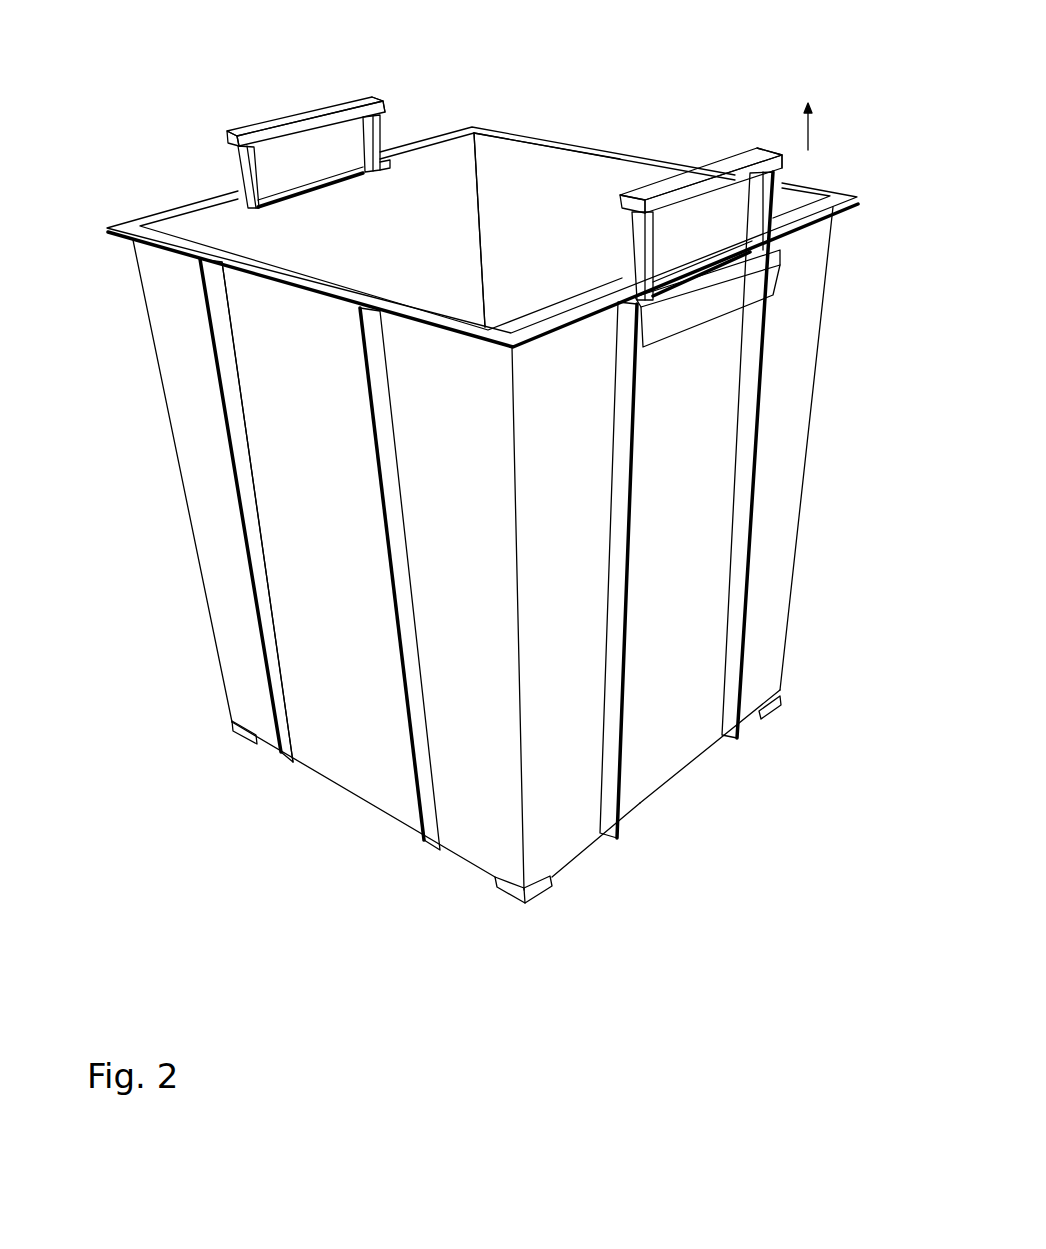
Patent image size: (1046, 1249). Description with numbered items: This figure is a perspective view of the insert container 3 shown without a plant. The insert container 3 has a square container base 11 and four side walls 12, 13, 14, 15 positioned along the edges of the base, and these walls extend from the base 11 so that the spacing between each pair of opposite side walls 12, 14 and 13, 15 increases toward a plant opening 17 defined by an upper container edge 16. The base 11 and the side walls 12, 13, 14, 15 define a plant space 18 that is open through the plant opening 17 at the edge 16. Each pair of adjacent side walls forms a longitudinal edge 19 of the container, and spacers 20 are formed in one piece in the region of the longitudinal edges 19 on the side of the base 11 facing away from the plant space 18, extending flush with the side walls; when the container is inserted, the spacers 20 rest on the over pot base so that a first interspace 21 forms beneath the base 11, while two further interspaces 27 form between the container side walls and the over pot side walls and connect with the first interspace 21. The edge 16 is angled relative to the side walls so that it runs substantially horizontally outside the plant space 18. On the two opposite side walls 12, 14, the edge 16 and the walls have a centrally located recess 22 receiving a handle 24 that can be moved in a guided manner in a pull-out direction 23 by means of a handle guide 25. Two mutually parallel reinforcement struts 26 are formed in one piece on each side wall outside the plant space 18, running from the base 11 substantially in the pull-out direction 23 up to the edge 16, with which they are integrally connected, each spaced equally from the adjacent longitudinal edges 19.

The insert container 3 is at (547, 128).
The container base 11 is at (563, 867).
The container side wall 12 is at (800, 436).
The container side wall 13 is at (600, 170).
The container side wall 14 is at (430, 166).
The container side wall 15 is at (187, 453).
The upper container edge 16 is at (123, 225).
The plant opening 17 is at (513, 160).
The plant space 18 is at (581, 239).
The longitudinal edge 19 is at (516, 868).
The spacer 20 is at (230, 726).
The first interspace 21 is at (341, 797).
The recess 22 is at (276, 176).
The pull-out direction 23 is at (812, 128).
The handle 24 is at (318, 107).
The handle guide 25 is at (763, 267).
The reinforcement strut 26 is at (288, 763).
The interspace 27 is at (283, 495).